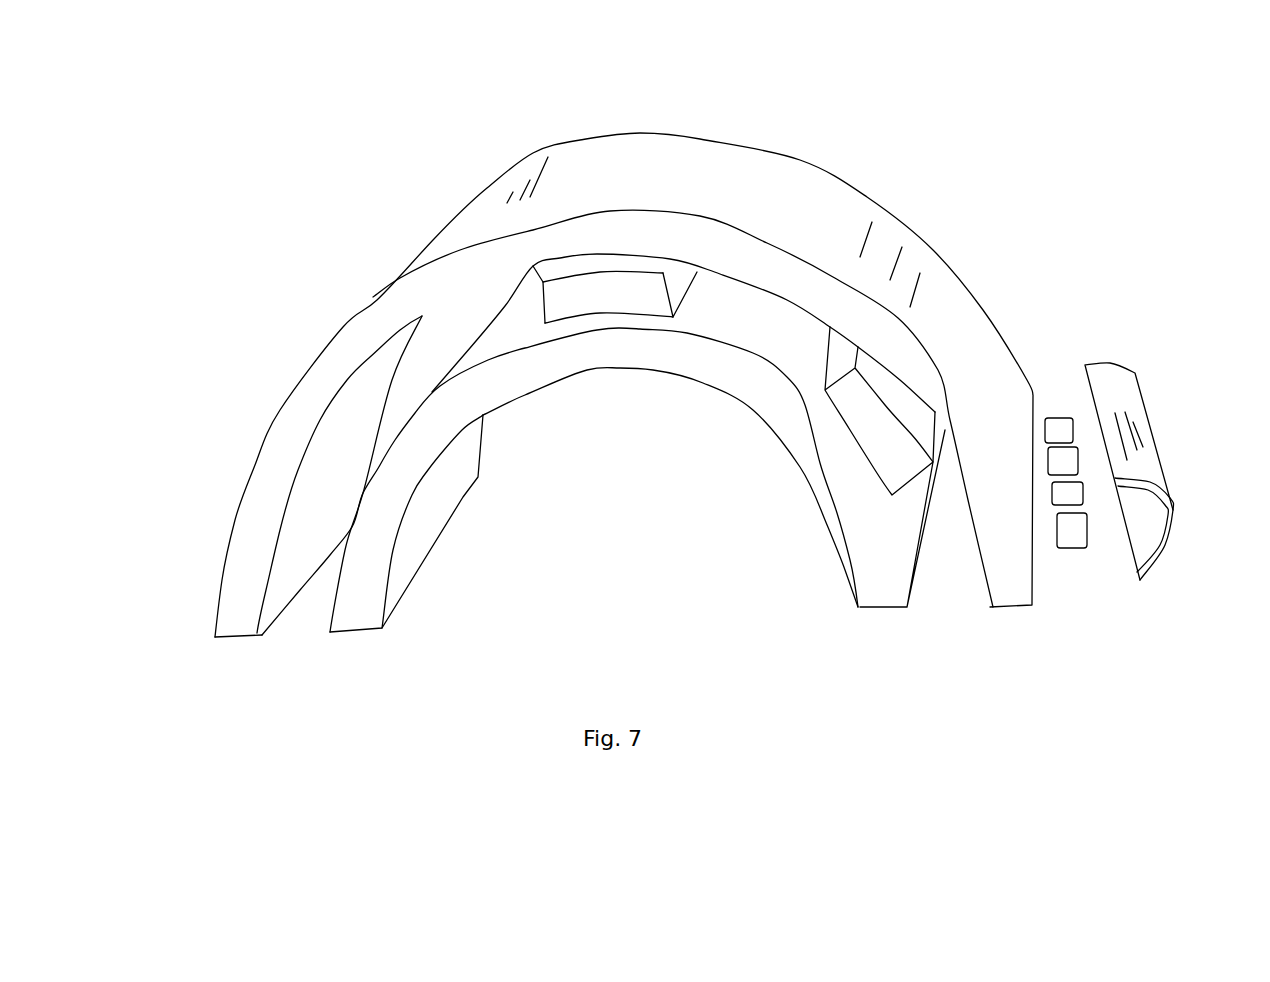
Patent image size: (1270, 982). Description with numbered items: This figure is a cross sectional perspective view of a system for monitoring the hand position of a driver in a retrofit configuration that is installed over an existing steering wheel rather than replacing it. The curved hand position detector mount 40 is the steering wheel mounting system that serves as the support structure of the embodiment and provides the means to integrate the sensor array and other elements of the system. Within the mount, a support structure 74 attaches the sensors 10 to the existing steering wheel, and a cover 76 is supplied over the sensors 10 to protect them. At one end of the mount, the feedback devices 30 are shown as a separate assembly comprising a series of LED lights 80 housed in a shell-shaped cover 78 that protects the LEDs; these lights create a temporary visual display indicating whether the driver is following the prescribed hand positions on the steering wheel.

The hand position detector mount 40 is at (943, 110).
The cover 76 is at (637, 430).
The support structure 74 is at (606, 366).
The sensors 10 is at (610, 302).
The feedback devices 30 is at (1135, 437).
The cover 78 is at (1147, 467).
The LED lights 80 is at (1080, 457).